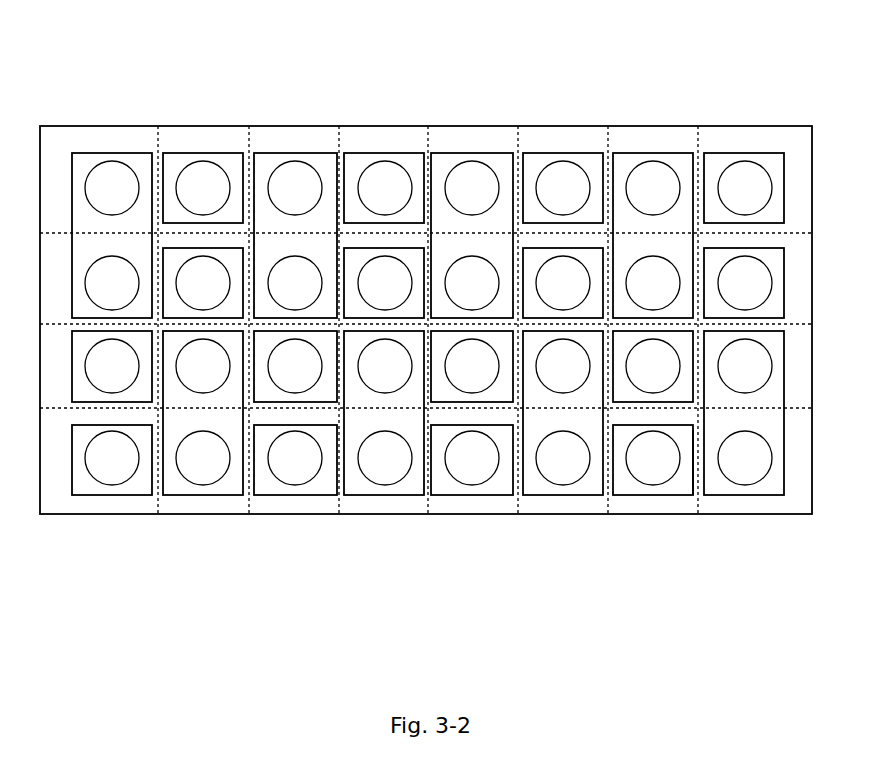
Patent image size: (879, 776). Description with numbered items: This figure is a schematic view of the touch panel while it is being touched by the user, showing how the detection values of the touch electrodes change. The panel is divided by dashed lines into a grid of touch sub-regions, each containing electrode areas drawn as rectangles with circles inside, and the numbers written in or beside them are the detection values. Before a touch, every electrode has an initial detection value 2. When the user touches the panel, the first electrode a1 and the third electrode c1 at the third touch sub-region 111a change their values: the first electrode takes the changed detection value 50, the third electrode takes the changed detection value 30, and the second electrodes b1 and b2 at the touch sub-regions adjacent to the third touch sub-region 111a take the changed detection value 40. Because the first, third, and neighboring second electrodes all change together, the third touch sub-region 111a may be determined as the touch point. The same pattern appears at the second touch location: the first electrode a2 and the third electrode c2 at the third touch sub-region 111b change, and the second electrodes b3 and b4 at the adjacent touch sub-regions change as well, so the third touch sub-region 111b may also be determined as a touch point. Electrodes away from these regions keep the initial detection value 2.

The initial detection value 2 is at (428, 324).
The changed detection value of third electrode 30 is at (473, 324).
The changed detection value of second electrode 40 is at (521, 361).
The changed detection value of first electrode 50 is at (511, 323).
The third touch sub-region 111a is at (348, 126).
The third touch sub-region 111b is at (628, 497).
The first electrode a1 is at (384, 161).
The first electrode a2 is at (653, 486).
The second electrode b1 is at (442, 152).
The second electrode b2 is at (268, 152).
The second electrode b3 is at (533, 496).
The second electrode b4 is at (717, 496).
The third electrode c1 is at (416, 152).
The third electrode c2 is at (682, 497).